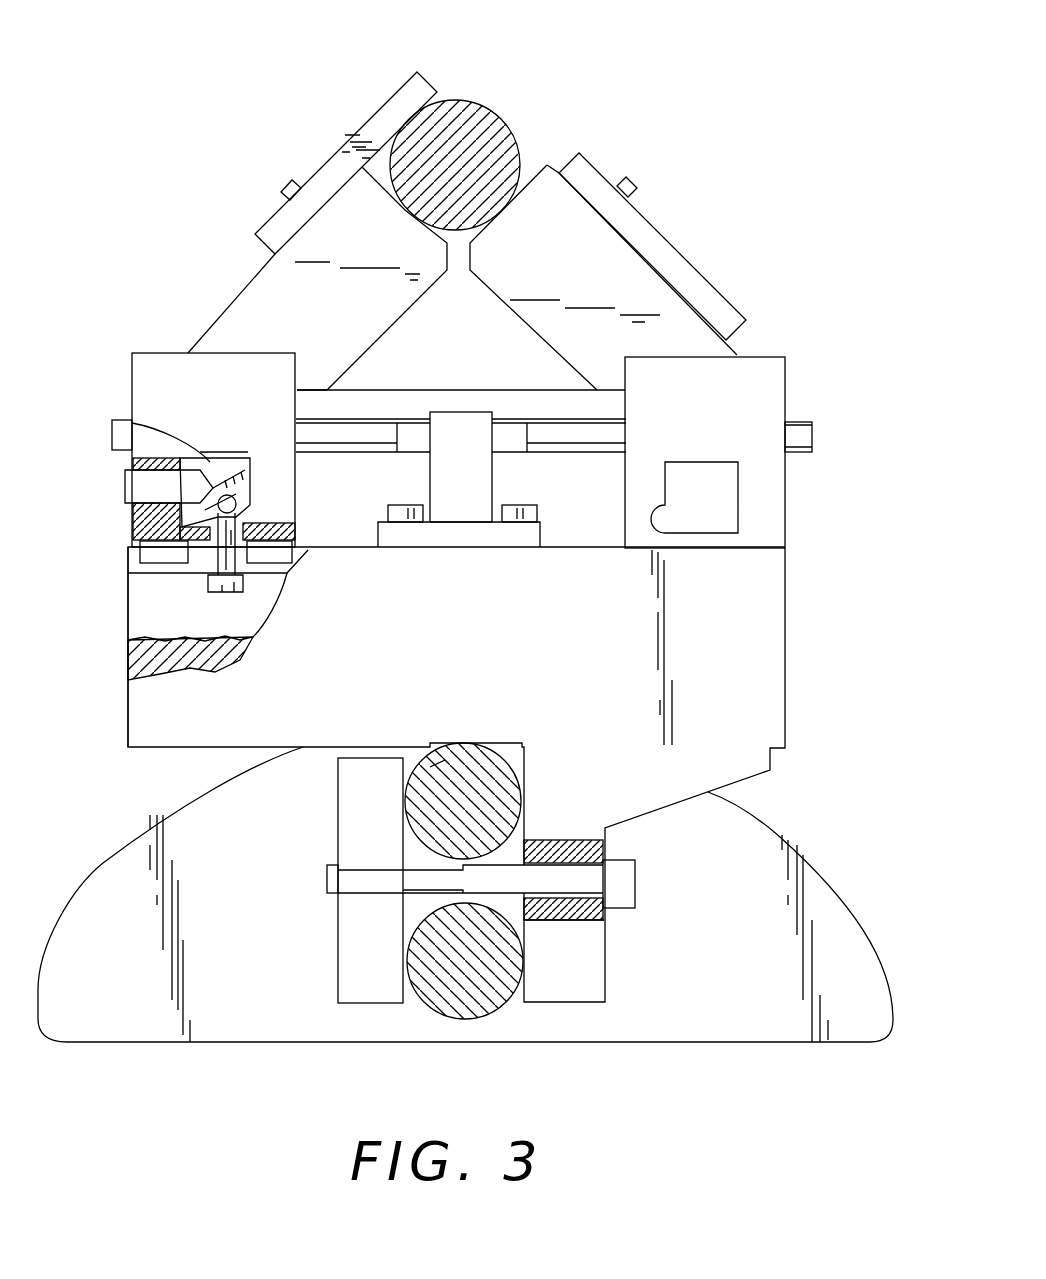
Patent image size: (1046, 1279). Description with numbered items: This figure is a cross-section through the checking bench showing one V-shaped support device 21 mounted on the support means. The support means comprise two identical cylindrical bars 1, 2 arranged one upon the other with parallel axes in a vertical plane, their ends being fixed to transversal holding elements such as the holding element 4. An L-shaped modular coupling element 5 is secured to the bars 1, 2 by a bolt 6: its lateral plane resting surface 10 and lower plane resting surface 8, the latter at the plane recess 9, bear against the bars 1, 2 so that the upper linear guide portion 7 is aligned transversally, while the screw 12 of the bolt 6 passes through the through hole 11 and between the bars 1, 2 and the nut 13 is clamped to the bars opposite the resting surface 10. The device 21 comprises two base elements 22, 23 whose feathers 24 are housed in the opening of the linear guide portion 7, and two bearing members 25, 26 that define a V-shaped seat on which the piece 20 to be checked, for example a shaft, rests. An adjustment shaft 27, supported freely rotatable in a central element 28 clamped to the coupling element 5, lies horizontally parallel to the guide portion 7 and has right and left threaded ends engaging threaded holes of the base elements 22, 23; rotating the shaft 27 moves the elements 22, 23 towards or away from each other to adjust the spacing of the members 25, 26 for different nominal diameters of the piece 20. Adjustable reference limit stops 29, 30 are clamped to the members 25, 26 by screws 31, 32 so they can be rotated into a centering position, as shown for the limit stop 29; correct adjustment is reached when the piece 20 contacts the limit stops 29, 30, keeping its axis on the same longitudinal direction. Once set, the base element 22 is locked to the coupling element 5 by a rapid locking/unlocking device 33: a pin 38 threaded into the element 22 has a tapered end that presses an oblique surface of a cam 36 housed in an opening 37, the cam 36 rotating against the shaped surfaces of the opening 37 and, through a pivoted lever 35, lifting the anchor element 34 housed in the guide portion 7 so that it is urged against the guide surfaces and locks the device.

The cylindrical bar 1 is at (507, 790).
The cylindrical bar 2 is at (480, 1000).
The transversal holding element 4 is at (118, 873).
The modular coupling element 5 is at (748, 678).
The bolt 6 is at (315, 968).
The linear guide portion 7 is at (137, 587).
The lower plane resting surface 8 is at (150, 756).
The plane recess 9 is at (430, 767).
The lateral plane resting surface 10 is at (515, 906).
The through hole 11 is at (587, 893).
The screw 12 is at (630, 870).
The nut 13 is at (377, 980).
The piece to be checked 20 is at (478, 122).
The V-shaped support device 21 is at (266, 108).
The base element 22 is at (238, 360).
The base element 23 is at (762, 395).
The feather 24 is at (147, 551).
The bearing member 25 is at (272, 277).
The bearing member 26 is at (737, 352).
The adjustment shaft 27 is at (377, 430).
The central element 28 is at (475, 482).
The adjustable reference limit stop 29 is at (365, 130).
The adjustable reference limit stop 30 is at (653, 240).
The screw 31 is at (285, 193).
The screw 32 is at (625, 185).
The rapid locking/unlocking device 33 is at (259, 466).
The anchor element 34 is at (223, 593).
The lever 35 is at (227, 550).
The cam 36 is at (112, 422).
The opening 37 is at (210, 458).
The pin 38 is at (137, 488).